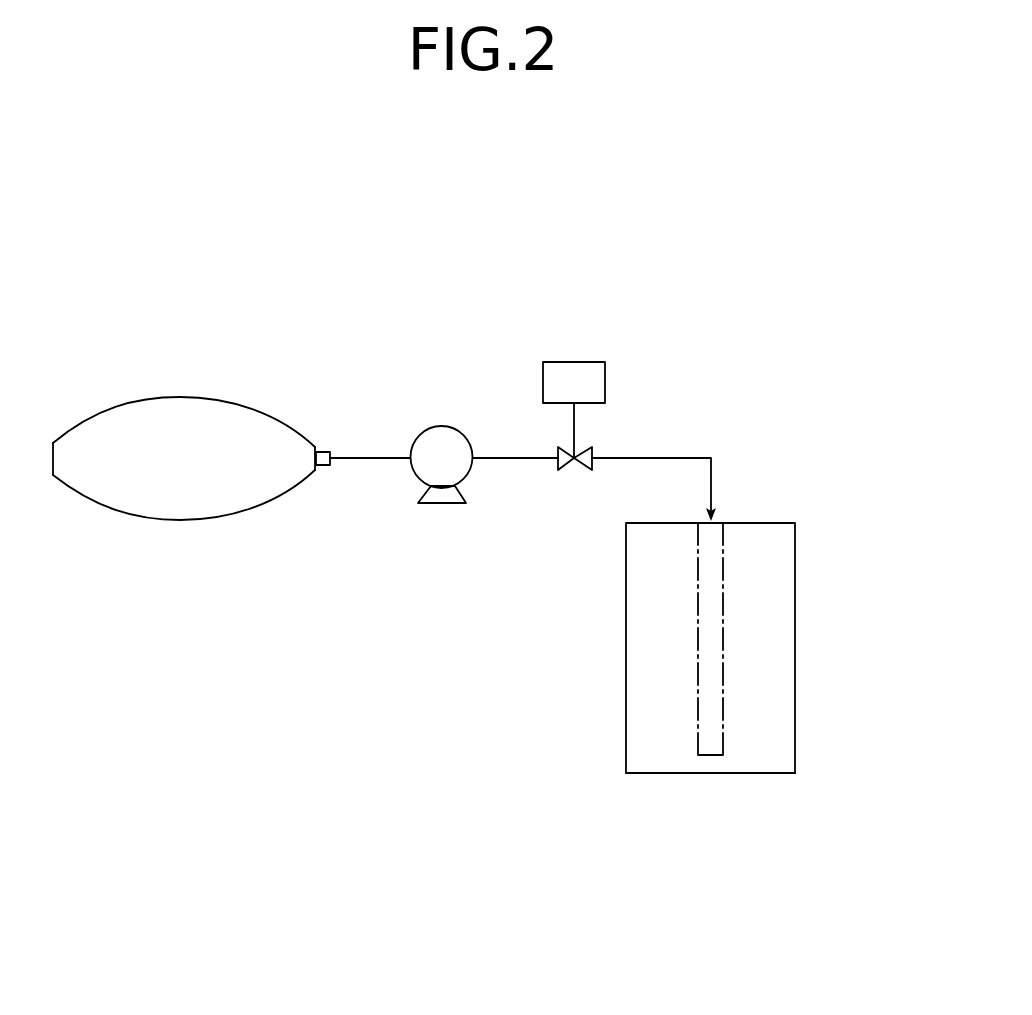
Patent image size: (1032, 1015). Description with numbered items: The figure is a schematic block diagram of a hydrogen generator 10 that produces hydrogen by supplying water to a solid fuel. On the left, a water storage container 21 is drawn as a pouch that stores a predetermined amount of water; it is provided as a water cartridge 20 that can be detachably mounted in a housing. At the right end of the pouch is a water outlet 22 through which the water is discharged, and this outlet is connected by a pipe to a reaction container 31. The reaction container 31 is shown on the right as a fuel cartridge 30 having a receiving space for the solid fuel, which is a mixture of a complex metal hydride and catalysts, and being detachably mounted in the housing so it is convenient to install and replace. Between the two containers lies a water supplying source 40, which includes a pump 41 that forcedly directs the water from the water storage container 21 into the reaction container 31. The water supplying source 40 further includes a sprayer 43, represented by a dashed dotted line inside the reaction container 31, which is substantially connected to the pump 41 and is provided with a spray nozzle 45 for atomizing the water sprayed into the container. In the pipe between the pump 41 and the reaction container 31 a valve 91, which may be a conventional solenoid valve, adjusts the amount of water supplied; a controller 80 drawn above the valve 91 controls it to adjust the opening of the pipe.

The hydrogen generator 10 is at (504, 246).
The water cartridge 20 is at (235, 399).
The water storage container 21 is at (181, 520).
The water outlet 22 is at (318, 448).
The fuel cartridge 30 is at (796, 680).
The reaction container 31 is at (707, 774).
The water supplying source 40 is at (452, 421).
The pump 41 is at (441, 504).
The sprayer 43 is at (724, 603).
The spray nozzle 45 is at (698, 683).
The controller 80 is at (590, 362).
The valve 91 is at (571, 471).